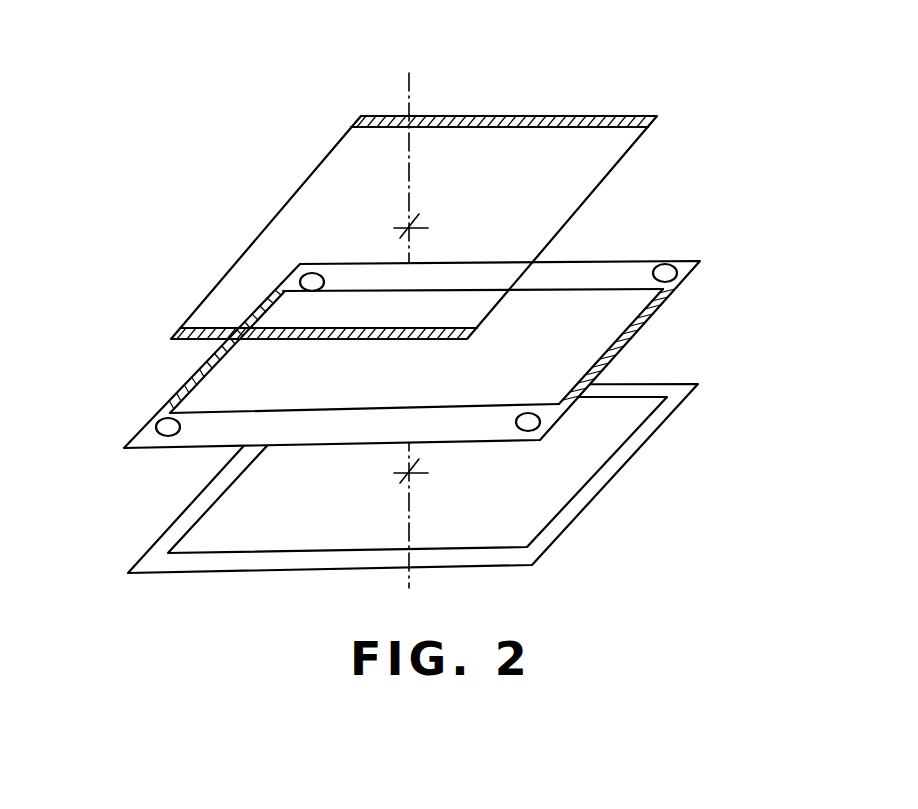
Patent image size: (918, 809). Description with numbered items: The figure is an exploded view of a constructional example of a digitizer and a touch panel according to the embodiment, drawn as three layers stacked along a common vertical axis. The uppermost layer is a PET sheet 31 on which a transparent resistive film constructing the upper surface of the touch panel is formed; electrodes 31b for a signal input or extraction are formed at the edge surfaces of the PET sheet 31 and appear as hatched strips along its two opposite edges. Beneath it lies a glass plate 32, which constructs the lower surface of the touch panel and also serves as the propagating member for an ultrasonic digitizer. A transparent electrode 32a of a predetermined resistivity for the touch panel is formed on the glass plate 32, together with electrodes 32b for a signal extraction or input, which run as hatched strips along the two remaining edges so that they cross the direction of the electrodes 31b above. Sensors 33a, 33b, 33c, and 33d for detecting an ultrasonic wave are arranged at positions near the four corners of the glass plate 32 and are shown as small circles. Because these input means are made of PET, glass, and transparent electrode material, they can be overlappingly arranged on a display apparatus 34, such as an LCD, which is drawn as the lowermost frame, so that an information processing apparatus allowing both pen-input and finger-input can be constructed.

The PET sheet 31 is at (430, 188).
The electrodes 31b is at (547, 114).
The glass plate 32 is at (419, 318).
The transparent electrode 32a is at (620, 315).
The electrodes 32b is at (192, 373).
The sensor 33a is at (677, 271).
The sensor 33b is at (529, 420).
The sensor 33c is at (314, 283).
The sensor 33d is at (160, 426).
The display apparatus 34 is at (630, 488).